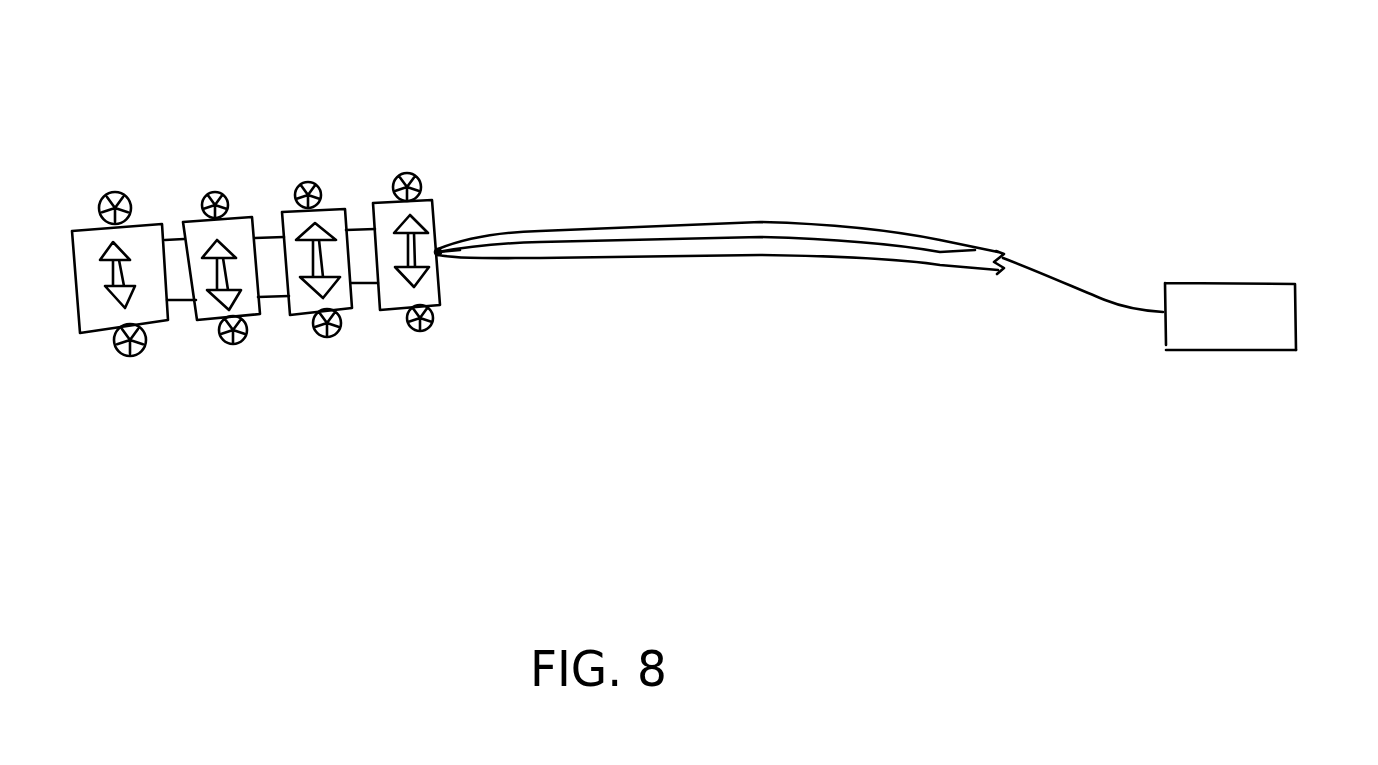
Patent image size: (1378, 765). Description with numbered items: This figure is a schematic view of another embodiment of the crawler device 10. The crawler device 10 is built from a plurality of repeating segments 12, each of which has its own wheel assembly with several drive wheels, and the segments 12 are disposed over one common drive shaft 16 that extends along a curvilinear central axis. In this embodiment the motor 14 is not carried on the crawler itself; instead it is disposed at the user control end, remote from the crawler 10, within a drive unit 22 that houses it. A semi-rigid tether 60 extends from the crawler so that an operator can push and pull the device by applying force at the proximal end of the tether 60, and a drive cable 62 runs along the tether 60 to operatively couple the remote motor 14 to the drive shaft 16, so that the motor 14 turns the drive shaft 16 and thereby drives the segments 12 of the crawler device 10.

The crawler device 10 is at (357, 92).
The repeating segment 12 is at (432, 200).
The motor 14 is at (1262, 278).
The drive shaft 16 is at (441, 248).
The drive unit 22 is at (1232, 352).
The tether 60 is at (837, 227).
The drive cable 62 is at (1032, 268).